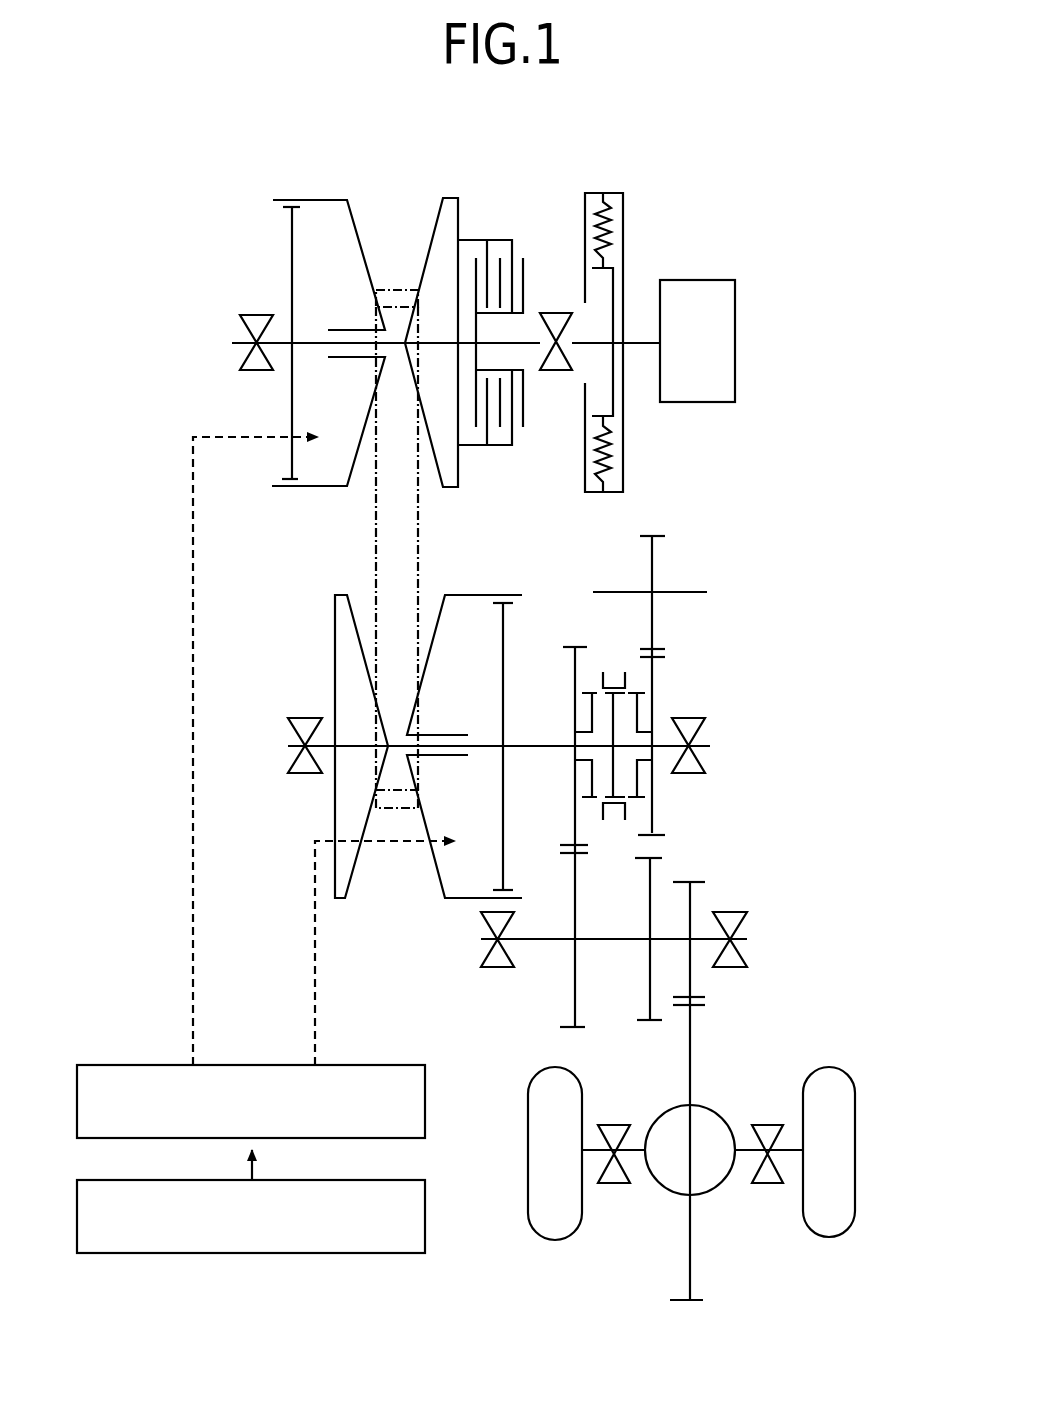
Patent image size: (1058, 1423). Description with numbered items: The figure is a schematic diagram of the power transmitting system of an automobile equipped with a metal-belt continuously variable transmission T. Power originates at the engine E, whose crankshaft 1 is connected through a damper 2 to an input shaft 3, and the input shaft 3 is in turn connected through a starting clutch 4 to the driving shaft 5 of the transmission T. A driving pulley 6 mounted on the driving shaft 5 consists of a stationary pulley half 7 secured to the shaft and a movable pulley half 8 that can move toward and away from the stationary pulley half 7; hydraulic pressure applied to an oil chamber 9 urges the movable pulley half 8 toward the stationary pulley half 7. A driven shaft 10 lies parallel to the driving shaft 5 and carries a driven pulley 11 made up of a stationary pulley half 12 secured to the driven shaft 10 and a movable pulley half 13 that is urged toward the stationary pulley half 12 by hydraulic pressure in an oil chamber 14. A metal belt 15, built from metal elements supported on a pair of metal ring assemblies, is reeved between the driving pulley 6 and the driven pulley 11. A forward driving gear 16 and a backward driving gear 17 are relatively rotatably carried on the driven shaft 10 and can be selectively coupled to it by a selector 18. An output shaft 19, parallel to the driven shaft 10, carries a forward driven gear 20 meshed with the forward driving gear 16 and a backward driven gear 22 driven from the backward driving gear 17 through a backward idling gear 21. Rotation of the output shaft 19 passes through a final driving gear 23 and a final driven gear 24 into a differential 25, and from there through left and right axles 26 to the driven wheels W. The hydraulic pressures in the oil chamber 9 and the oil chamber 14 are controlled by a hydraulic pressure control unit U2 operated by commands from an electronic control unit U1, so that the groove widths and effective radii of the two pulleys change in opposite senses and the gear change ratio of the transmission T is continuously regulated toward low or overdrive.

The crankshaft 1 is at (640, 346).
The damper 2 is at (635, 234).
The input shaft 3 is at (577, 340).
The starting clutch 4 is at (500, 233).
The driving shaft 5 is at (307, 340).
The driving pulley 6 is at (389, 243).
The stationary pulley half 7 is at (440, 228).
The movable pulley half 8 is at (355, 228).
The oil chamber 9 is at (312, 343).
The driven shaft 10 is at (553, 745).
The driven pulley 11 is at (400, 862).
The stationary pulley half 12 is at (333, 620).
The movable pulley half 13 is at (437, 623).
The oil chamber 14 is at (476, 746).
The metal belt 15 is at (419, 548).
The forward driving gear 16 is at (572, 647).
The backward driving gear 17 is at (660, 662).
The selector 18 is at (616, 808).
The output shaft 19 is at (597, 938).
The forward driven gear 20 is at (582, 1030).
The backward idling gear 21 is at (660, 535).
The backward driven gear 22 is at (647, 1023).
The final driving gear 23 is at (697, 880).
The final driven gear 24 is at (697, 1008).
The differential 25 is at (717, 1108).
The axle 26 is at (630, 1155).
The continuously variable transmission T is at (325, 537).
The engine E is at (697, 341).
The driven wheel W is at (522, 1212).
The electronic control unit U1 is at (427, 1195).
The hydraulic pressure control unit U2 is at (427, 1092).